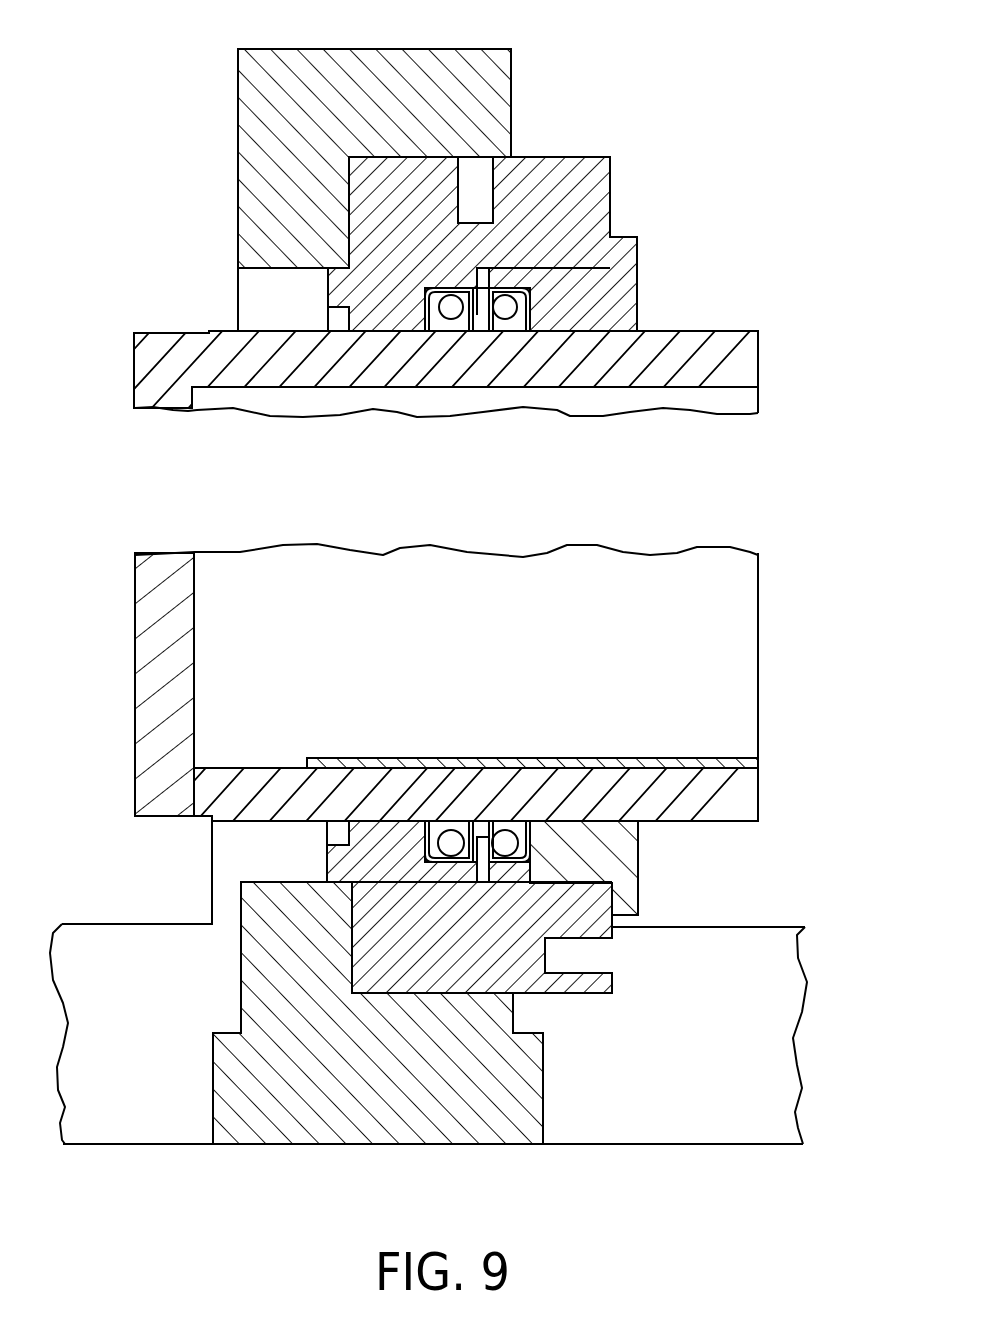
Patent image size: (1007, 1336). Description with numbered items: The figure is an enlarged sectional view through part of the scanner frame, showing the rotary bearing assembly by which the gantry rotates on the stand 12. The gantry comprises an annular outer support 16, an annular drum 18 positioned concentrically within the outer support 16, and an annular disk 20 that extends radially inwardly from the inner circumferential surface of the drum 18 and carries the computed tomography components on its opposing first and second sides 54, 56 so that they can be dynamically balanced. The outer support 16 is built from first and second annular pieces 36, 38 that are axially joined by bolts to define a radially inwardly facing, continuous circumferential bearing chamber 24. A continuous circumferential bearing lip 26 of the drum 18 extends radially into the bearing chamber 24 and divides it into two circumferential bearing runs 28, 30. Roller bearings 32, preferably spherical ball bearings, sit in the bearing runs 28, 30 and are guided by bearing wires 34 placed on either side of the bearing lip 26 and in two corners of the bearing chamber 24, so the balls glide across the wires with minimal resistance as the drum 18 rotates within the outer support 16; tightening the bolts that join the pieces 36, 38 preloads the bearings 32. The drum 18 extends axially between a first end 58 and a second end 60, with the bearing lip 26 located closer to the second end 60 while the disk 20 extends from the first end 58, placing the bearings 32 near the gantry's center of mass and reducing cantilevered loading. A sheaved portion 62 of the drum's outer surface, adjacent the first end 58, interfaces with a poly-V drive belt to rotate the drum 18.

The stand 12 is at (232, 47).
The annular outer support 16 is at (648, 234).
The annular drum 18 is at (772, 330).
The annular disk 20 is at (210, 668).
The bearing chamber 24 is at (497, 260).
The bearing lip 26 is at (462, 292).
The bearing run 28 is at (437, 290).
The bearing run 30 is at (530, 292).
The roller bearings 32 is at (448, 822).
The bearing wires 34 is at (458, 825).
The first annular piece 36 is at (583, 995).
The second annular piece 38 is at (640, 868).
The first side of the disk 54 is at (135, 650).
The second side of the disk 56 is at (194, 607).
The first end of the drum 58 is at (134, 368).
The second end of the drum 60 is at (760, 372).
The sheaved portion 62 is at (175, 331).